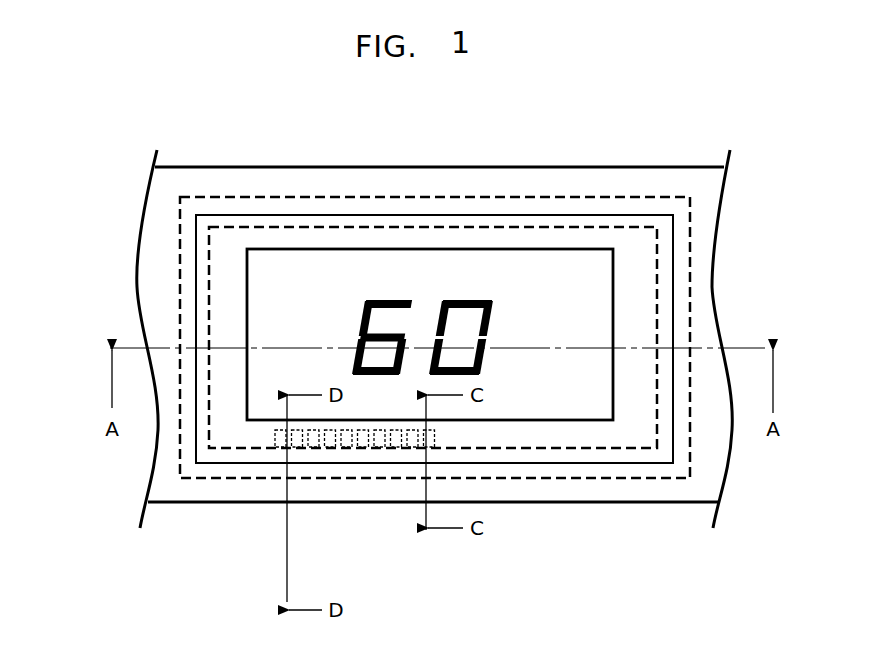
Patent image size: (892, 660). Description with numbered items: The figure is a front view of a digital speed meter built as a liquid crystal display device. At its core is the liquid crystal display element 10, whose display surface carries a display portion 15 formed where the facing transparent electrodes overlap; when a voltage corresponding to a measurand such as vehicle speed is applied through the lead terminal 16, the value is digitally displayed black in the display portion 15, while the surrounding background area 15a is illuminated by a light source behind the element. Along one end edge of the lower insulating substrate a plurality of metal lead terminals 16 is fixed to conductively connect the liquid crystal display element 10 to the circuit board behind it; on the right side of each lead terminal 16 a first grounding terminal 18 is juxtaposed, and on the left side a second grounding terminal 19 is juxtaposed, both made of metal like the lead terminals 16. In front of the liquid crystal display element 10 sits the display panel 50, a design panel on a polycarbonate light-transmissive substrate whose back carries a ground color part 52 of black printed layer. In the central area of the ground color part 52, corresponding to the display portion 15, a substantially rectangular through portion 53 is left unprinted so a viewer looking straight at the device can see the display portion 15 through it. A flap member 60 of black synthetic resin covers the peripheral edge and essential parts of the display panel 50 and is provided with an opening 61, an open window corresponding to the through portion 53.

The liquid crystal display element 10 is at (235, 448).
The display portion 15 is at (360, 312).
The background area 15a is at (553, 400).
The lead terminal 16 is at (343, 440).
The first grounding terminal 18 is at (432, 440).
The second grounding terminal 19 is at (260, 515).
The display panel 50 is at (345, 193).
The ground color part 52 is at (455, 223).
The through portion 53 is at (430, 268).
The flap member 60 is at (200, 180).
The opening 61 is at (365, 328).